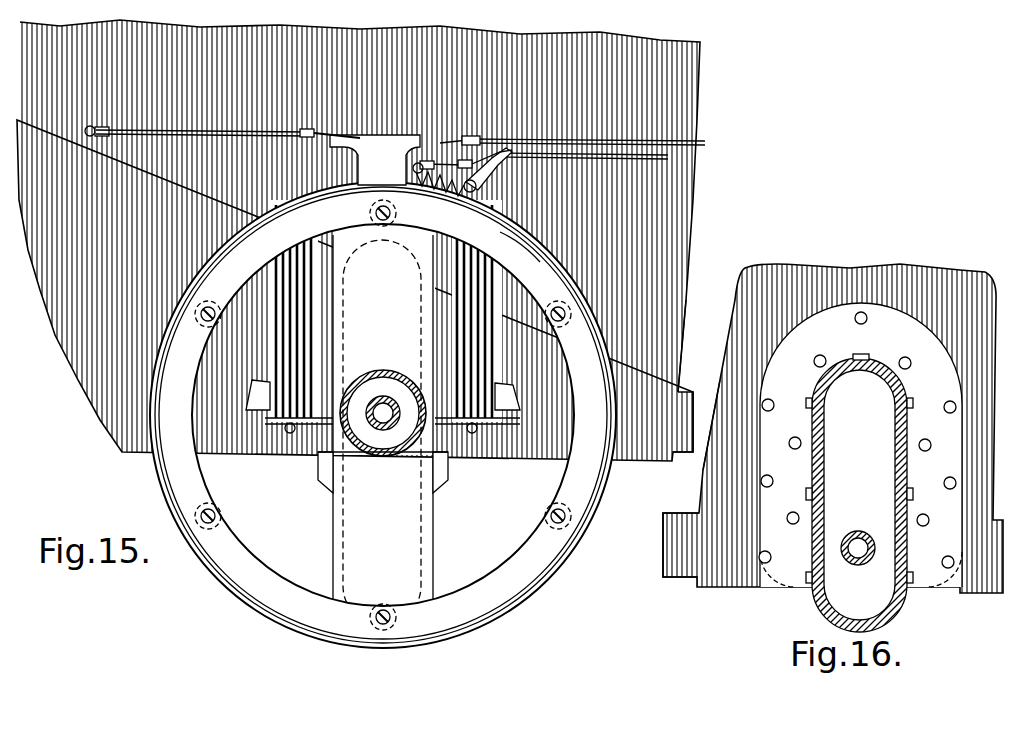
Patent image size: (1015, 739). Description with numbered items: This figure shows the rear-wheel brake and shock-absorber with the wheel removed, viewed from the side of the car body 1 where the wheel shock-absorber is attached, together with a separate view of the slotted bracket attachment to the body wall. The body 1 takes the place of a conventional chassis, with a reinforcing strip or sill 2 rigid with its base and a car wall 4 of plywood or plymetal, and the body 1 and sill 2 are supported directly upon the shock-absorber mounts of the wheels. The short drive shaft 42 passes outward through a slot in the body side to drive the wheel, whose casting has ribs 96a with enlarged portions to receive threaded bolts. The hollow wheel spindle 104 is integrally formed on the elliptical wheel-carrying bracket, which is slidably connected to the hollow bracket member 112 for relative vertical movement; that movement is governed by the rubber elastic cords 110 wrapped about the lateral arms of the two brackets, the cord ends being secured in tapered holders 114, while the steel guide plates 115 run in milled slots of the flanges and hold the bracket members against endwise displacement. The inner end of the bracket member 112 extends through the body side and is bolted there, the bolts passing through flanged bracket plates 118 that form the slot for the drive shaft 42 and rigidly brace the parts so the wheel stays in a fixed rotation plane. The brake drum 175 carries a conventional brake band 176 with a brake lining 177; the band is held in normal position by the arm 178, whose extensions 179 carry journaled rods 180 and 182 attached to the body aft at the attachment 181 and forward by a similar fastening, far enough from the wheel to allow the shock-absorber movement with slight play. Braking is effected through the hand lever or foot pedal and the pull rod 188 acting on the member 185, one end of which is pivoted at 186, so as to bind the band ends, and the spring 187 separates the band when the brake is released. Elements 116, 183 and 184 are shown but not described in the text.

In FIG. 15, the body 1 is at (690, 172).
In FIG. 16, the body 1 is at (722, 588).
In FIG. 15, the reinforcing strip or sill 2 is at (683, 390).
In FIG. 16, the reinforcing strip or sill 2 is at (664, 541).
In FIG. 15, the car wall 4 is at (690, 245).
In FIG. 16, the car wall 4 is at (705, 476).
In FIG. 15, the drive shaft 42 is at (383, 435).
In FIG. 16, the drive shaft 42 is at (854, 562).
In FIG. 15, the ribs 96a is at (560, 510).
In FIG. 15, the hollow wheel spindle 104 is at (396, 378).
In FIG. 15, the rubber elastic cords or bands 110 is at (495, 350).
In FIG. 16, the hollow bracket member 112 is at (814, 600).
In FIG. 15, the tapered holders 114 is at (252, 396).
In FIG. 15, the steel plates 115 is at (318, 480).
In FIG. 15, the coil 116 is at (272, 340).
In FIG. 15, the flanged bracket plates 118 is at (470, 456).
In FIG. 16, the flanged bracket plates 118 is at (805, 333).
In FIG. 15, the brake drum 175 is at (518, 598).
In FIG. 15, the brake band 176 is at (430, 642).
In FIG. 15, the brake lining 177 is at (540, 270).
In FIG. 15, the arm 178 is at (378, 140).
In FIG. 15, the extensions 179 is at (322, 132).
In FIG. 15, the journaled rod 180 is at (206, 130).
In FIG. 15, the attachment 181 is at (88, 126).
In FIG. 15, the journaled rod 182 is at (565, 142).
In FIG. 15, the pin 183 is at (420, 162).
In FIG. 15, the link 184 is at (470, 162).
In FIG. 15, the lever 185 is at (494, 168).
In FIG. 15, the pivot 186 is at (498, 180).
In FIG. 15, the spring 187 is at (440, 203).
In FIG. 15, the pull rod 188 is at (660, 158).